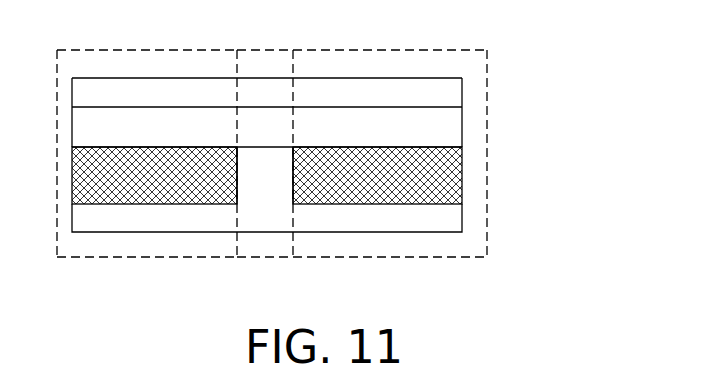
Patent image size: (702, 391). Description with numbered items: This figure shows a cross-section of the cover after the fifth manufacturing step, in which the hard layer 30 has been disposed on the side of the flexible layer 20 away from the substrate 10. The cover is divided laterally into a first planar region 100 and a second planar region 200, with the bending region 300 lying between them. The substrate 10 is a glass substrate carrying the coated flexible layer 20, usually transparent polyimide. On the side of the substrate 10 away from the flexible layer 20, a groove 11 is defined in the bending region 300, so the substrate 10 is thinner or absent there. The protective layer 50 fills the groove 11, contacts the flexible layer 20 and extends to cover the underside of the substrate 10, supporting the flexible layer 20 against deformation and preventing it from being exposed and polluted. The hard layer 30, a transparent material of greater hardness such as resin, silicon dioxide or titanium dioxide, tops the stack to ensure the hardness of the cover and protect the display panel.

The first planar region 100 is at (173, 93).
The second planar region 200 is at (352, 93).
The bending region 300 is at (268, 93).
The hard layer 30 is at (438, 97).
The flexible layer 20 is at (438, 130).
The substrate 10 is at (443, 183).
The groove 11 is at (237, 173).
The protective layer 50 is at (372, 217).